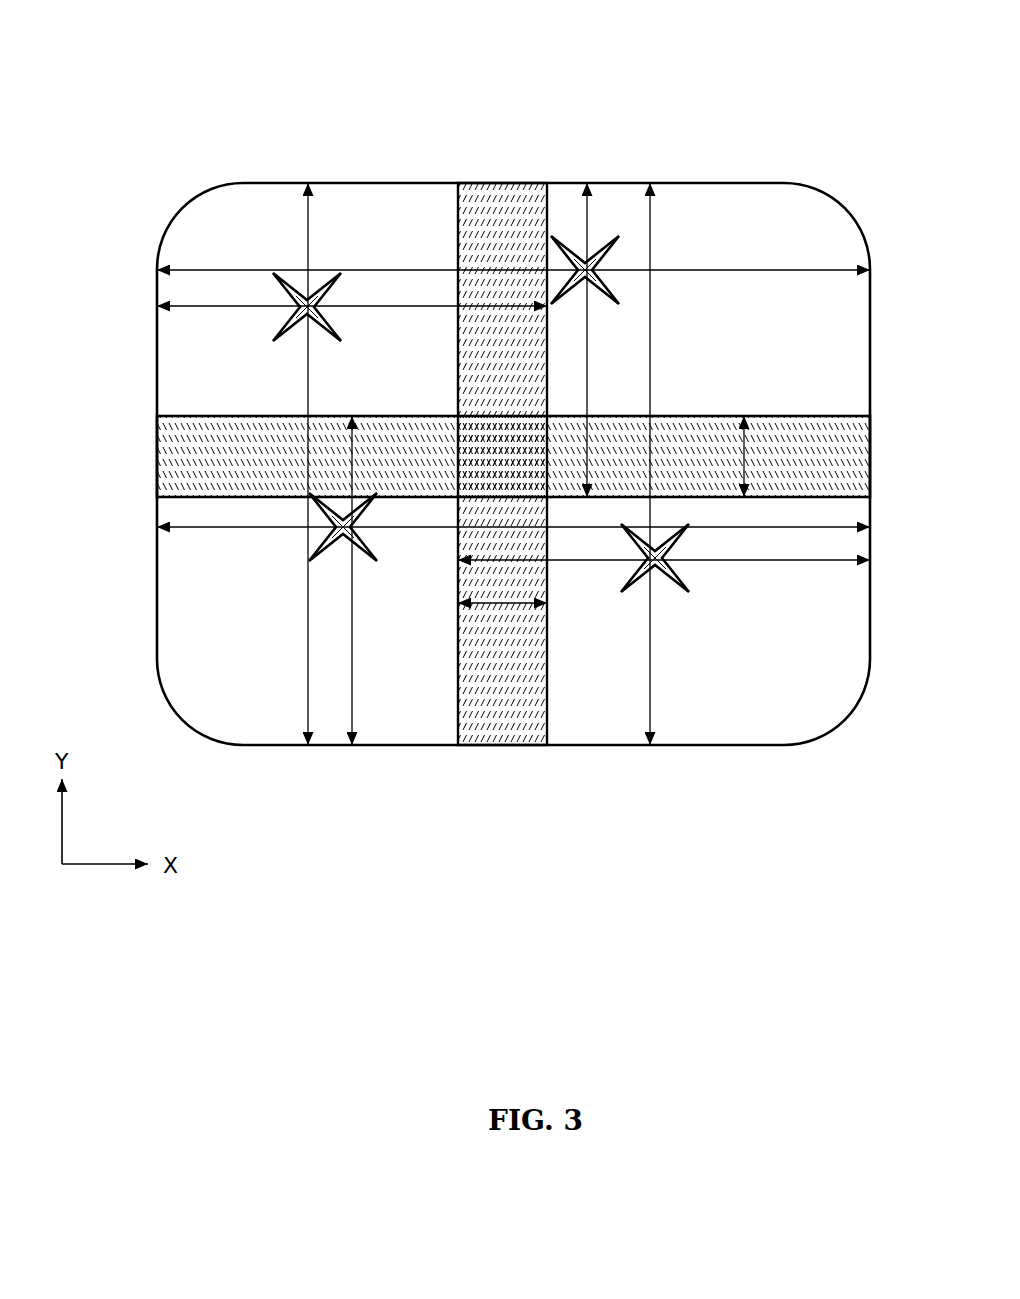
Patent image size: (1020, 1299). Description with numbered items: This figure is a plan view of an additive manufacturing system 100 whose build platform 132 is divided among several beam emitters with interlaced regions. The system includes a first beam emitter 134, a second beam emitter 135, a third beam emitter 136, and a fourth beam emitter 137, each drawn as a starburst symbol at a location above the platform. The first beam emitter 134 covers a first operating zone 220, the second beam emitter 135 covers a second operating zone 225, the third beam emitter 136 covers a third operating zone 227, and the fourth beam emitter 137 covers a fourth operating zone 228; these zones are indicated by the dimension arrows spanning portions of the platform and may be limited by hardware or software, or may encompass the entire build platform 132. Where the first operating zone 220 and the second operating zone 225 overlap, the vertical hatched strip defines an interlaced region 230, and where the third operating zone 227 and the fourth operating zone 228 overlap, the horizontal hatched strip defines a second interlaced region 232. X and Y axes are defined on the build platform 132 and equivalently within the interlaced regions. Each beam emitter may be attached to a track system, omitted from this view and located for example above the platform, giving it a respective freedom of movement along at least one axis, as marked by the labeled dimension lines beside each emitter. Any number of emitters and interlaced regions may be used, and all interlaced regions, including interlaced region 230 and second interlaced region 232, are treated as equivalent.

The additive manufacturing system 100 is at (643, 126).
The build platform 132 is at (403, 183).
The first beam emitter 134 is at (332, 333).
The second beam emitter 135 is at (645, 575).
The third beam emitter 136 is at (620, 248).
The fourth beam emitter 137 is at (326, 538).
The first operating zone 220 is at (308, 378).
The second operating zone 225 is at (683, 563).
The third operating zone 227 is at (600, 292).
The fourth operating zone 228 is at (360, 542).
The interlaced region 230 is at (503, 603).
The second interlaced region 232 is at (744, 456).